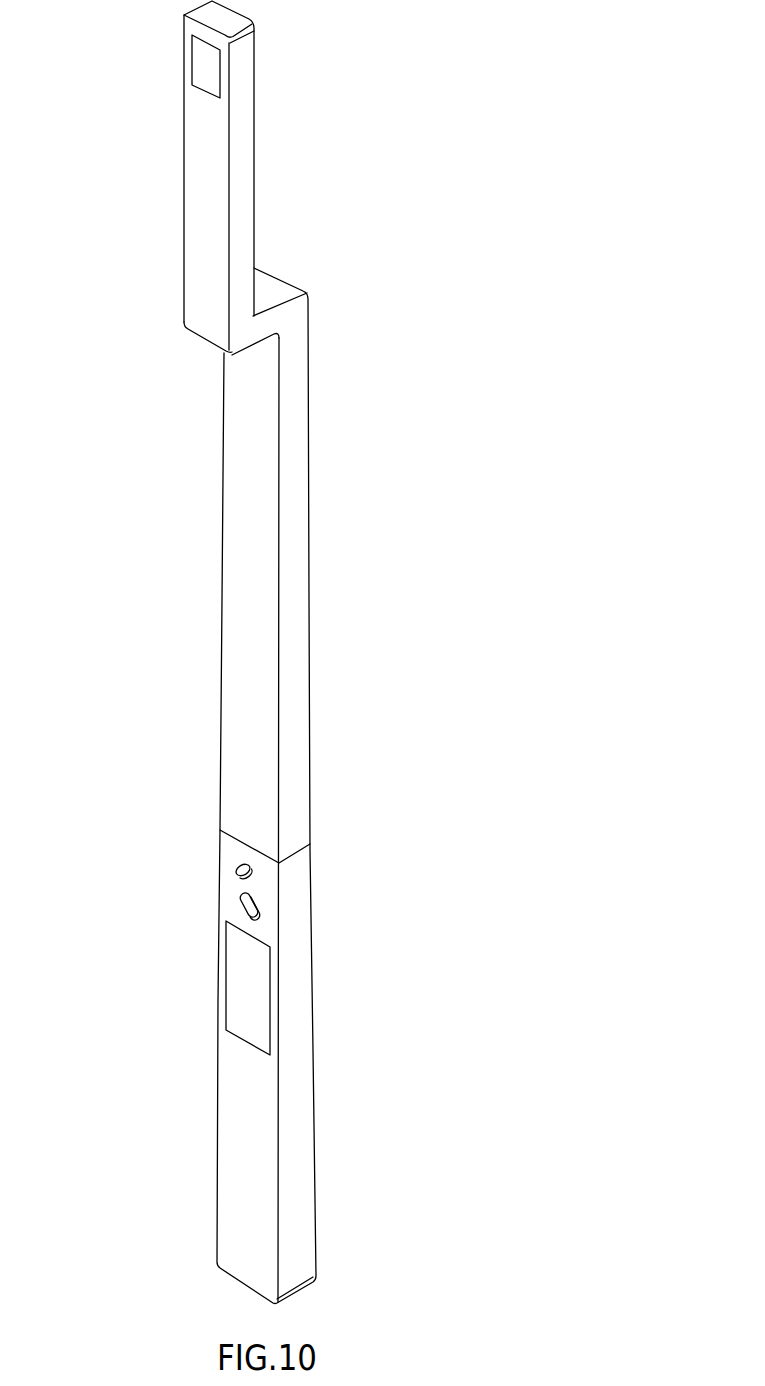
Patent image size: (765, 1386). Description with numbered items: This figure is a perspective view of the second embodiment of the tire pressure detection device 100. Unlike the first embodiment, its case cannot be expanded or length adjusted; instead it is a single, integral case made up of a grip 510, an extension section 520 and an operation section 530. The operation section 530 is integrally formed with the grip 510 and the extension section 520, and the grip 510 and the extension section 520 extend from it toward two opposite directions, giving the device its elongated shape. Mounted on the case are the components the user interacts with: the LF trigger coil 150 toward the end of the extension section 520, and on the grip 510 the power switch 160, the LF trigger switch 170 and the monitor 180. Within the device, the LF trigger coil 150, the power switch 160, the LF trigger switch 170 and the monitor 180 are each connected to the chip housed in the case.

The tire pressure detection device 100 is at (172, 1159).
The LF trigger coil 150 is at (200, 62).
The power switch 160 is at (236, 877).
The LF trigger switch 170 is at (241, 903).
The monitor 180 is at (237, 985).
The grip 510 is at (307, 1117).
The extension section 520 is at (236, 190).
The operation section 530 is at (253, 333).